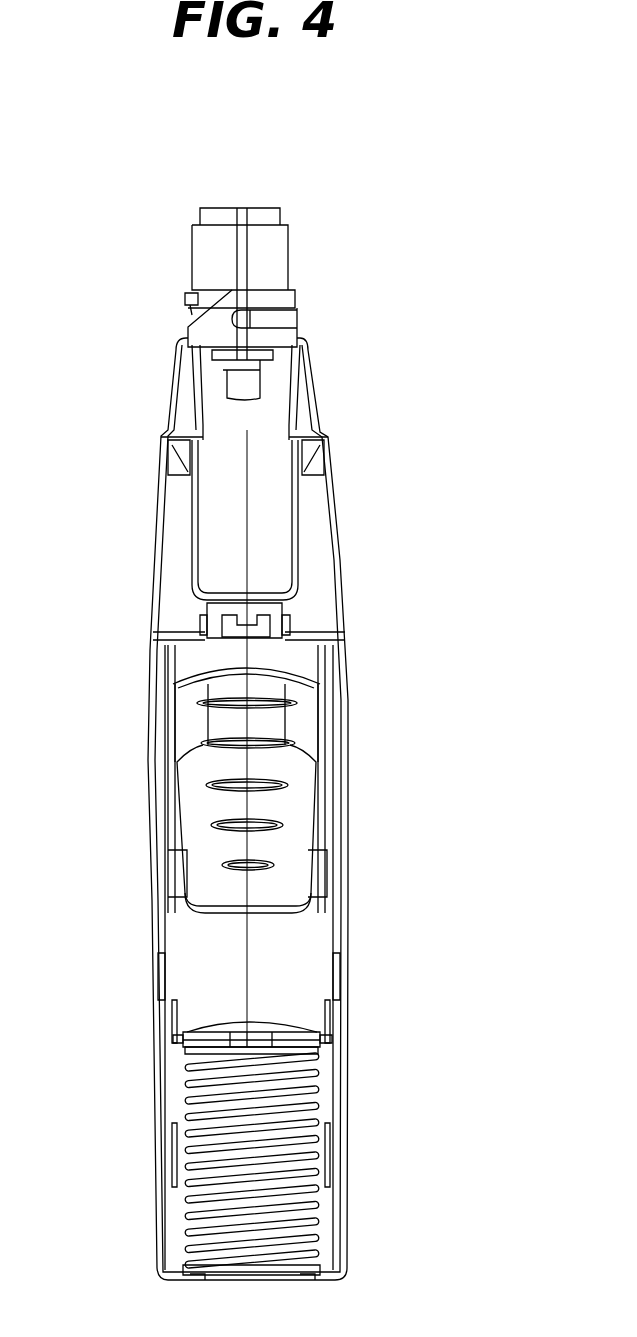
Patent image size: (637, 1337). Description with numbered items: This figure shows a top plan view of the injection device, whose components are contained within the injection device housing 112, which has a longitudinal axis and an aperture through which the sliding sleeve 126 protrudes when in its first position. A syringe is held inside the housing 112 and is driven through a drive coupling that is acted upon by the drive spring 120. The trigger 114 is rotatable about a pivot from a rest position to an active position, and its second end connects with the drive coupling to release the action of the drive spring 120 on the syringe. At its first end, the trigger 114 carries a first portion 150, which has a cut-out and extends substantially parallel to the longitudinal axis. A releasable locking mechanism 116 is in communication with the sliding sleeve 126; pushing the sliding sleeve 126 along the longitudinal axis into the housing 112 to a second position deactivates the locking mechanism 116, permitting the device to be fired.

The injection device housing 112 is at (240, 631).
The trigger 114 is at (312, 737).
The releasable locking mechanism 116 is at (315, 550).
The drive spring 120 is at (314, 1100).
The sliding sleeve 126 is at (265, 206).
The first portion 150 is at (276, 625).